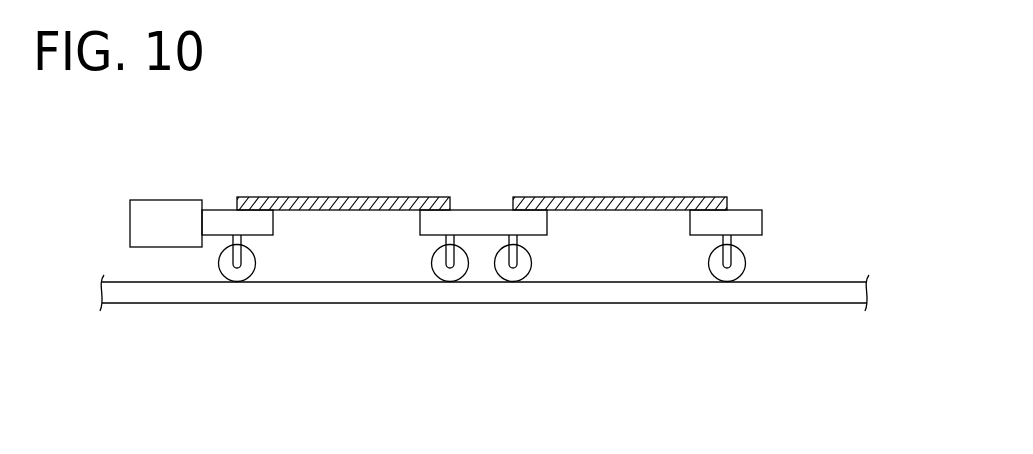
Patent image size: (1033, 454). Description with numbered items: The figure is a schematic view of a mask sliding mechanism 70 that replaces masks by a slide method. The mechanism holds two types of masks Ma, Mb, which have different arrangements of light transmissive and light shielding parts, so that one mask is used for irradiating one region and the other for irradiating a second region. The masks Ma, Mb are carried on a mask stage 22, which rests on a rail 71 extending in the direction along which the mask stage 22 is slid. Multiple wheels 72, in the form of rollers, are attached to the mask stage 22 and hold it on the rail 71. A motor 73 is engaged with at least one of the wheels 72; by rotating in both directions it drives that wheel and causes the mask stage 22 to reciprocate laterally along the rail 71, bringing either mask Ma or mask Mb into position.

The mask sliding mechanism 70 is at (201, 335).
The rail 71 is at (373, 295).
The wheels 72 is at (248, 272).
The motor 73 is at (162, 198).
The mask stage 22 is at (216, 210).
The mask Ma is at (347, 197).
The mask Mb is at (635, 197).